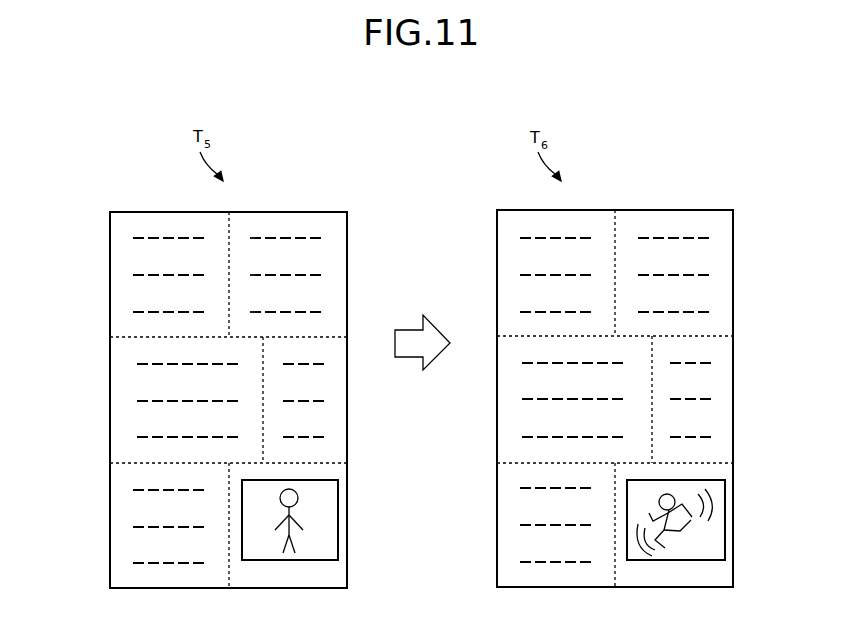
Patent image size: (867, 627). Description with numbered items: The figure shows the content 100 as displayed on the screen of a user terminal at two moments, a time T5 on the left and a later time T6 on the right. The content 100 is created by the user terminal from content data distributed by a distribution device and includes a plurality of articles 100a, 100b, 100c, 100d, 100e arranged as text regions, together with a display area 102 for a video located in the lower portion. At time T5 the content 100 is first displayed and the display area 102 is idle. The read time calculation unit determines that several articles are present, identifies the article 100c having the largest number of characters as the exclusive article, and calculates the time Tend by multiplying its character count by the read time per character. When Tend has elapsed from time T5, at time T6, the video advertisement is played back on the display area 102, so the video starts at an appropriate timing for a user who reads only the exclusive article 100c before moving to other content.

The content 100 is at (282, 213).
The article 100a is at (128, 259).
The article 100b is at (330, 258).
The article 100c is at (128, 389).
The article 100d is at (330, 390).
The article 100e is at (128, 509).
The display area 102 is at (287, 561).